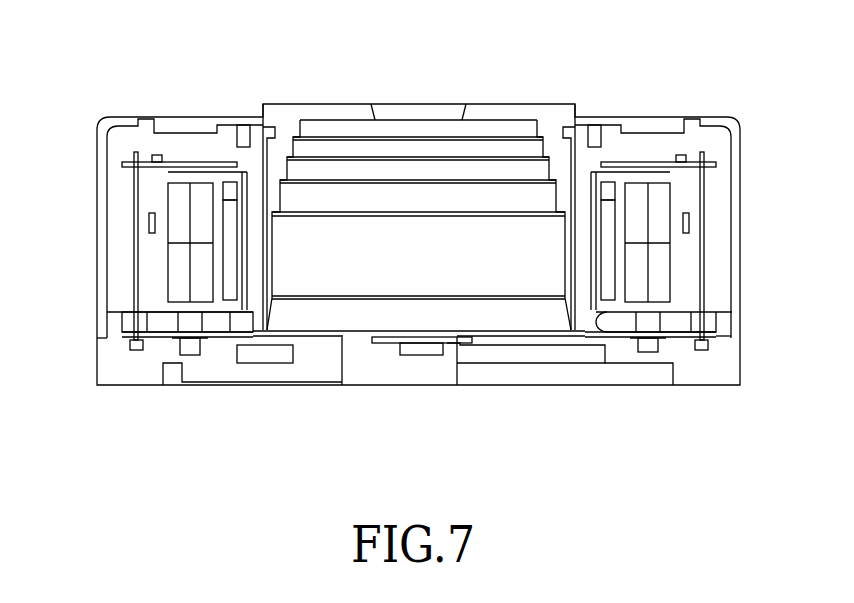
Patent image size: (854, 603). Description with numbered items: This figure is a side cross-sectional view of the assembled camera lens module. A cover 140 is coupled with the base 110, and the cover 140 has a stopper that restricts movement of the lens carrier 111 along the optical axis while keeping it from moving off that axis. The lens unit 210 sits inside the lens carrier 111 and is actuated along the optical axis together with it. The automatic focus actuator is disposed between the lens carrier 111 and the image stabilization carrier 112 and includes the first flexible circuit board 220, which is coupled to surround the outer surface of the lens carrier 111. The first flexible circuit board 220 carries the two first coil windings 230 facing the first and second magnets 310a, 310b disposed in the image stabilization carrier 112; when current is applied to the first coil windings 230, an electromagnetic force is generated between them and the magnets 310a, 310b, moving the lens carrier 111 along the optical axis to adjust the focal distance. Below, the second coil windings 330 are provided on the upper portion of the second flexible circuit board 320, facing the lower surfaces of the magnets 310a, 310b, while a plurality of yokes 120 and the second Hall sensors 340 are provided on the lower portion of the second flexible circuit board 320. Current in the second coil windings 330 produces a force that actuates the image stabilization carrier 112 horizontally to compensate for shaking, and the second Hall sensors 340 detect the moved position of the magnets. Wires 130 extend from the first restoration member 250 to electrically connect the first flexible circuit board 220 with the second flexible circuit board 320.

The base 110 is at (723, 360).
The lens carrier 111 is at (250, 310).
The image stabilization carrier 112 is at (157, 186).
The yokes 120 is at (172, 340).
The wires 130 is at (158, 268).
The cover 140 is at (100, 220).
The lens unit 210 is at (415, 128).
The first flexible circuit board 220 is at (236, 310).
The first coil windings 230 is at (227, 207).
The first restoration member 250 is at (707, 158).
The first magnet 310a is at (172, 187).
The second magnet 310b is at (652, 190).
The second flexible circuit board 320 is at (313, 332).
The second coil windings 330 is at (158, 322).
The second Hall sensors 340 is at (183, 350).